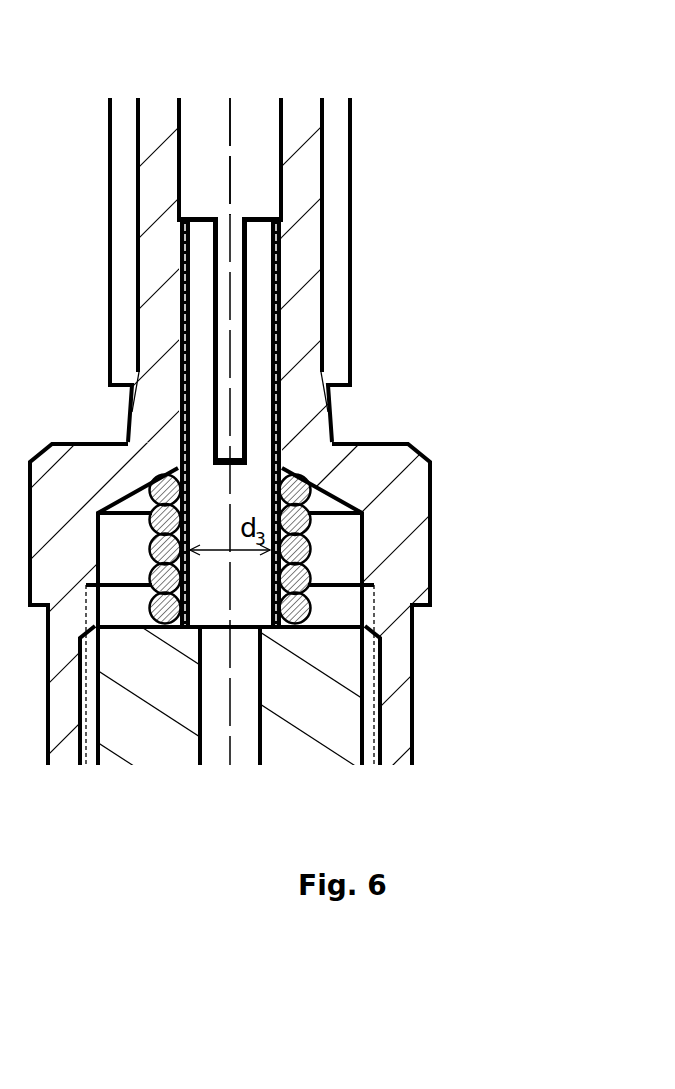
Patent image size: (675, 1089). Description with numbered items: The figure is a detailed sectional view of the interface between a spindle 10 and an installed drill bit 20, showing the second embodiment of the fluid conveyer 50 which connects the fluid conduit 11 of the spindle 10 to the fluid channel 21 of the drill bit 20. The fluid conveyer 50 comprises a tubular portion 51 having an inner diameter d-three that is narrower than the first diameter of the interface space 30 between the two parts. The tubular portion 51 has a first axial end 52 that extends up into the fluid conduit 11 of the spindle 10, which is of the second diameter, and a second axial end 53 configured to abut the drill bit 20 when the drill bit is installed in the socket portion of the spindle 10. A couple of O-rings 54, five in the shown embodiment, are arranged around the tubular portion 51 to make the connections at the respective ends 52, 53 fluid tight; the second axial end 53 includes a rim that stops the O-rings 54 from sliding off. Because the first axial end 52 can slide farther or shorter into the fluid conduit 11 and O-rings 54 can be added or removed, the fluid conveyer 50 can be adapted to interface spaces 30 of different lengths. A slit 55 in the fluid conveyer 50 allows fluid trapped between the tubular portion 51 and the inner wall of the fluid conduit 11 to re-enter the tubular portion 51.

The spindle 10 is at (303, 115).
The fluid conduit 11 is at (182, 143).
The drill bit 20 is at (253, 661).
The fluid channel 21 is at (248, 702).
The interface space 30 is at (337, 543).
The fluid conveyer 50 is at (318, 396).
The tubular portion 51 is at (252, 333).
The first axial end 52 is at (268, 228).
The second axial end 53 is at (302, 612).
The O-rings 54 is at (305, 546).
The slit 55 is at (240, 288).